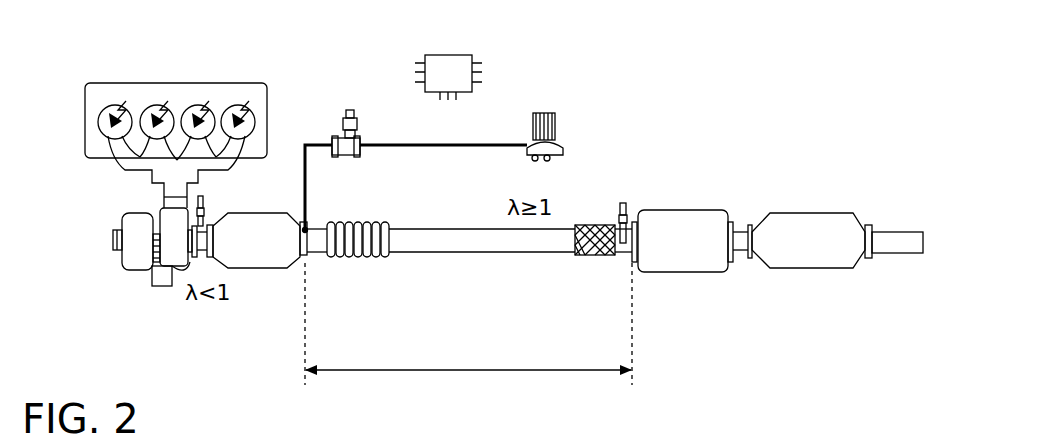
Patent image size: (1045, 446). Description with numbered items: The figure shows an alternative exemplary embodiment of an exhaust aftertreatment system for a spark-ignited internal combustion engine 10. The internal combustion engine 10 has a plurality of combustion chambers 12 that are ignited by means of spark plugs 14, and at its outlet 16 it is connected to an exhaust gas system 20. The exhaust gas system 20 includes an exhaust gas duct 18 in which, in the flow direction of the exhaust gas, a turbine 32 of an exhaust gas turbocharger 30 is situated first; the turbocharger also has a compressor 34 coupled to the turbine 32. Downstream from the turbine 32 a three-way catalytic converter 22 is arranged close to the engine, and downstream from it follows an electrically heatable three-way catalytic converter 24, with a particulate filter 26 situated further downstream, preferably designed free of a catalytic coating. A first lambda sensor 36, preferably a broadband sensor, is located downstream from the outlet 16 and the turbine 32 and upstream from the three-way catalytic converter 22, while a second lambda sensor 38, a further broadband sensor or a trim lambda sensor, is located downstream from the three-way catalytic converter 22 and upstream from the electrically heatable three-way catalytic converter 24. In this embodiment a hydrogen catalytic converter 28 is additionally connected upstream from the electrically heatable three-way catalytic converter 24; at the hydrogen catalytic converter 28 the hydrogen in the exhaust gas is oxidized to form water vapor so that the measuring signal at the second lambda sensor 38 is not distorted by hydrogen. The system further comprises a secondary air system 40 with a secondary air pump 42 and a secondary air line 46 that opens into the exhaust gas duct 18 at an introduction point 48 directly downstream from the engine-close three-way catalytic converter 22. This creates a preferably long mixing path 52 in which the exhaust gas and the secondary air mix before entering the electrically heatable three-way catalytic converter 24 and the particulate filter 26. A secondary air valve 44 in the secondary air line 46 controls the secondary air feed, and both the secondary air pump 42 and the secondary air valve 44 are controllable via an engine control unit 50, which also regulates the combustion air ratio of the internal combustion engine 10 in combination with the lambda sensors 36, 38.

The internal combustion engine 10 is at (163, 81).
The combustion chamber 12 is at (148, 118).
The spark plug 14 is at (240, 110).
The outlet 16 is at (170, 170).
The exhaust gas duct 18 is at (512, 241).
The exhaust gas system 20 is at (720, 122).
The three-way catalytic converter 22 is at (258, 222).
The electrically heatable three-way catalytic converter 24 is at (682, 220).
The particulate filter 26 is at (815, 222).
The hydrogen catalytic converter 28 is at (594, 224).
The exhaust gas turbocharger 30 is at (136, 296).
The turbine 32 is at (174, 256).
The compressor 34 is at (132, 257).
The first lambda sensor 36 is at (203, 212).
The second lambda sensor 38 is at (624, 203).
The secondary air system 40 is at (457, 148).
The secondary air pump 42 is at (550, 137).
The secondary air valve 44 is at (352, 133).
The secondary air line 46 is at (437, 148).
The introduction point 48 is at (309, 228).
The control unit 50 is at (450, 65).
The mixing path 52 is at (468, 324).